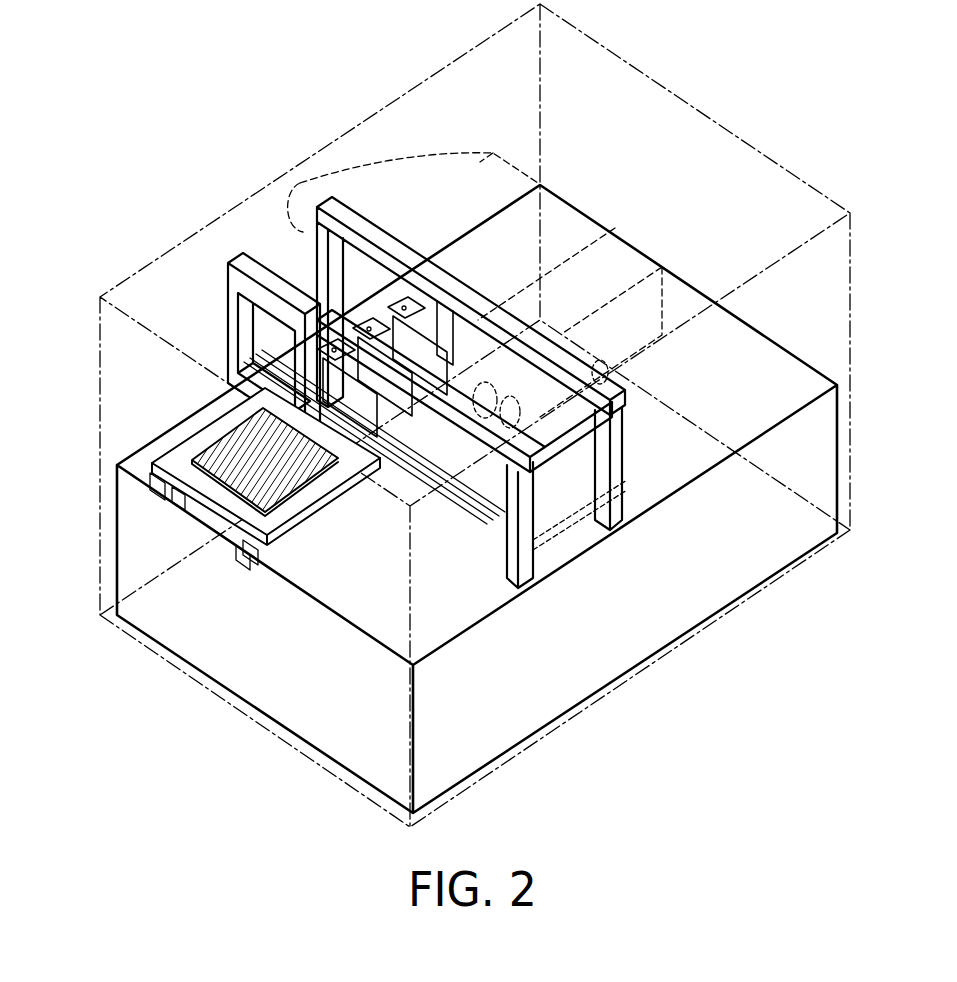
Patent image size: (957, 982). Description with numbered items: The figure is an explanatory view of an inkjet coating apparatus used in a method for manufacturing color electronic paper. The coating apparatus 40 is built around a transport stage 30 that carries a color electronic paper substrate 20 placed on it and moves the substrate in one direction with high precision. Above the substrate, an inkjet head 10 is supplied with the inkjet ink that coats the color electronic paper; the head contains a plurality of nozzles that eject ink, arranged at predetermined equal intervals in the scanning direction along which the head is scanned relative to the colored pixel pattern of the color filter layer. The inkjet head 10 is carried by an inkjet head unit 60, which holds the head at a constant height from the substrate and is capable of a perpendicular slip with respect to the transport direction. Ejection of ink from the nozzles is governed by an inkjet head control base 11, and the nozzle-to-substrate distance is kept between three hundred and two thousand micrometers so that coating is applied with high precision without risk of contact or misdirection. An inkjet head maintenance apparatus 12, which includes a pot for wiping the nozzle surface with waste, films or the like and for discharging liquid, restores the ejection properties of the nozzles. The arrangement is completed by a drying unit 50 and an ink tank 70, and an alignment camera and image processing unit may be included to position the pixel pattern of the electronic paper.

The inkjet head 10 is at (335, 335).
The inkjet head control base 11 is at (195, 622).
The inkjet head maintenance apparatus 12 is at (538, 545).
The color electronic paper substrate 20 is at (222, 436).
The transport stage 30 is at (217, 487).
The coating apparatus 40 is at (326, 150).
The drying unit 50 is at (430, 185).
The inkjet head unit 60 is at (230, 302).
The ink tank 70 is at (610, 430).